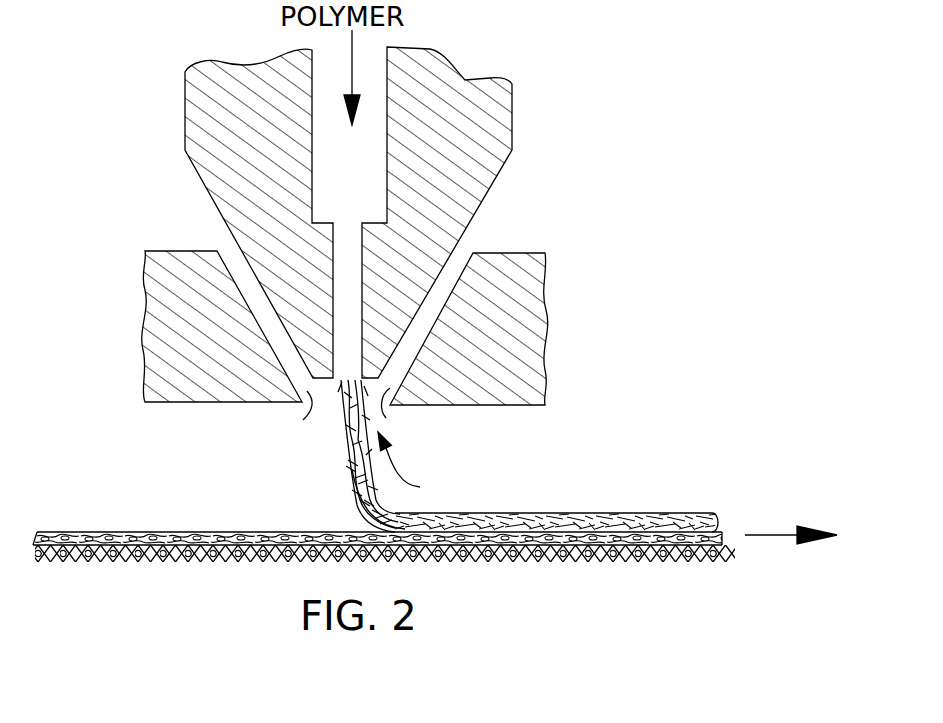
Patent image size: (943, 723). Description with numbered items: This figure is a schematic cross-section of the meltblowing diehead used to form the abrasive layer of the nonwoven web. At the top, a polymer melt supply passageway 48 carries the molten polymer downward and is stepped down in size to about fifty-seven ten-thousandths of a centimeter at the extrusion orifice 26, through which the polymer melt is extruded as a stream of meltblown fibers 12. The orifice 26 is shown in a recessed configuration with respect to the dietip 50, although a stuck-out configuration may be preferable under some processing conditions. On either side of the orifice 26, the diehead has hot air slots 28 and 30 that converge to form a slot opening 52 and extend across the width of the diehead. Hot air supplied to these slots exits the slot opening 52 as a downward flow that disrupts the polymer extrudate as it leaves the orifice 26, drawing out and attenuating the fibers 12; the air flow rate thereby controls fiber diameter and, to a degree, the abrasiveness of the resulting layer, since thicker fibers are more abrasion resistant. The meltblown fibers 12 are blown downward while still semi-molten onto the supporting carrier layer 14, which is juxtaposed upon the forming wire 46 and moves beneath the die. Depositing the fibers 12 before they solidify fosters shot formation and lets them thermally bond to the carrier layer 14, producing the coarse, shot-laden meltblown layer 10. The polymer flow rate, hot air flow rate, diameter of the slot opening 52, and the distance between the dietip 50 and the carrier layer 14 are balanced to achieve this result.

The polymer melt supply passageway 48 is at (376, 62).
The dietip 50 is at (300, 406).
The hot air slot 28 is at (306, 418).
The hot air slot 30 is at (386, 412).
The extrusion orifice 26 is at (329, 428).
The slot opening 52 is at (419, 467).
The meltblown fibers 12 is at (346, 480).
The meltblown layer 10 is at (615, 513).
The supporting carrier layer 14 is at (136, 530).
The forming wire 46 is at (724, 563).